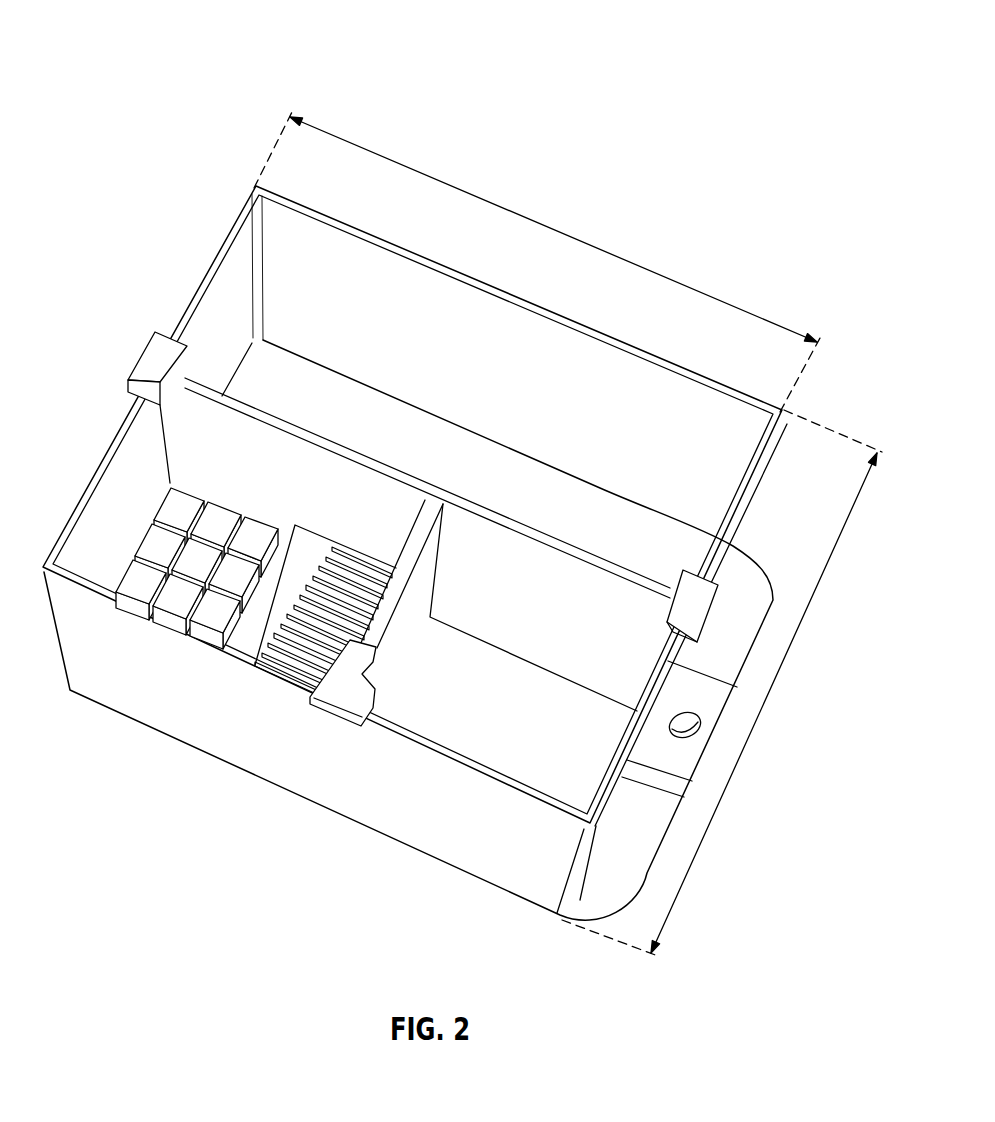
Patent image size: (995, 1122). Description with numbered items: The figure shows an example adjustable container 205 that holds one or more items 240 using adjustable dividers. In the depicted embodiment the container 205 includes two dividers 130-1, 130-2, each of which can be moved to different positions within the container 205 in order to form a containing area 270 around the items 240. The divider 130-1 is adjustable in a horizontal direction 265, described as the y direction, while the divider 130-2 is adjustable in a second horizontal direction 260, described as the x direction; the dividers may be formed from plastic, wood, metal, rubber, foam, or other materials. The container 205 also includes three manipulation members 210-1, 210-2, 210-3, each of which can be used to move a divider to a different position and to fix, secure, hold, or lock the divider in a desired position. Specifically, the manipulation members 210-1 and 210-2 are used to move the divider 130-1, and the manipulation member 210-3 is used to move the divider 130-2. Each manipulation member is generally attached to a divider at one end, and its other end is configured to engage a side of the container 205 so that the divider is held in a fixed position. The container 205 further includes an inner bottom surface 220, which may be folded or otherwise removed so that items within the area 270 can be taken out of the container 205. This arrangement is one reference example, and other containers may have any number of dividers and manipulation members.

The container 205 is at (192, 42).
The horizontal direction 260 is at (520, 207).
The horizontal direction 265 is at (761, 710).
The manipulation member 210-1 is at (155, 360).
The manipulation member 210-2 is at (698, 585).
The manipulation member 210-3 is at (332, 714).
The inner bottom surface 220 is at (423, 460).
The area 270 is at (132, 476).
The items 240 is at (133, 590).
The divider 130-1 is at (295, 495).
The divider 130-2 is at (398, 627).